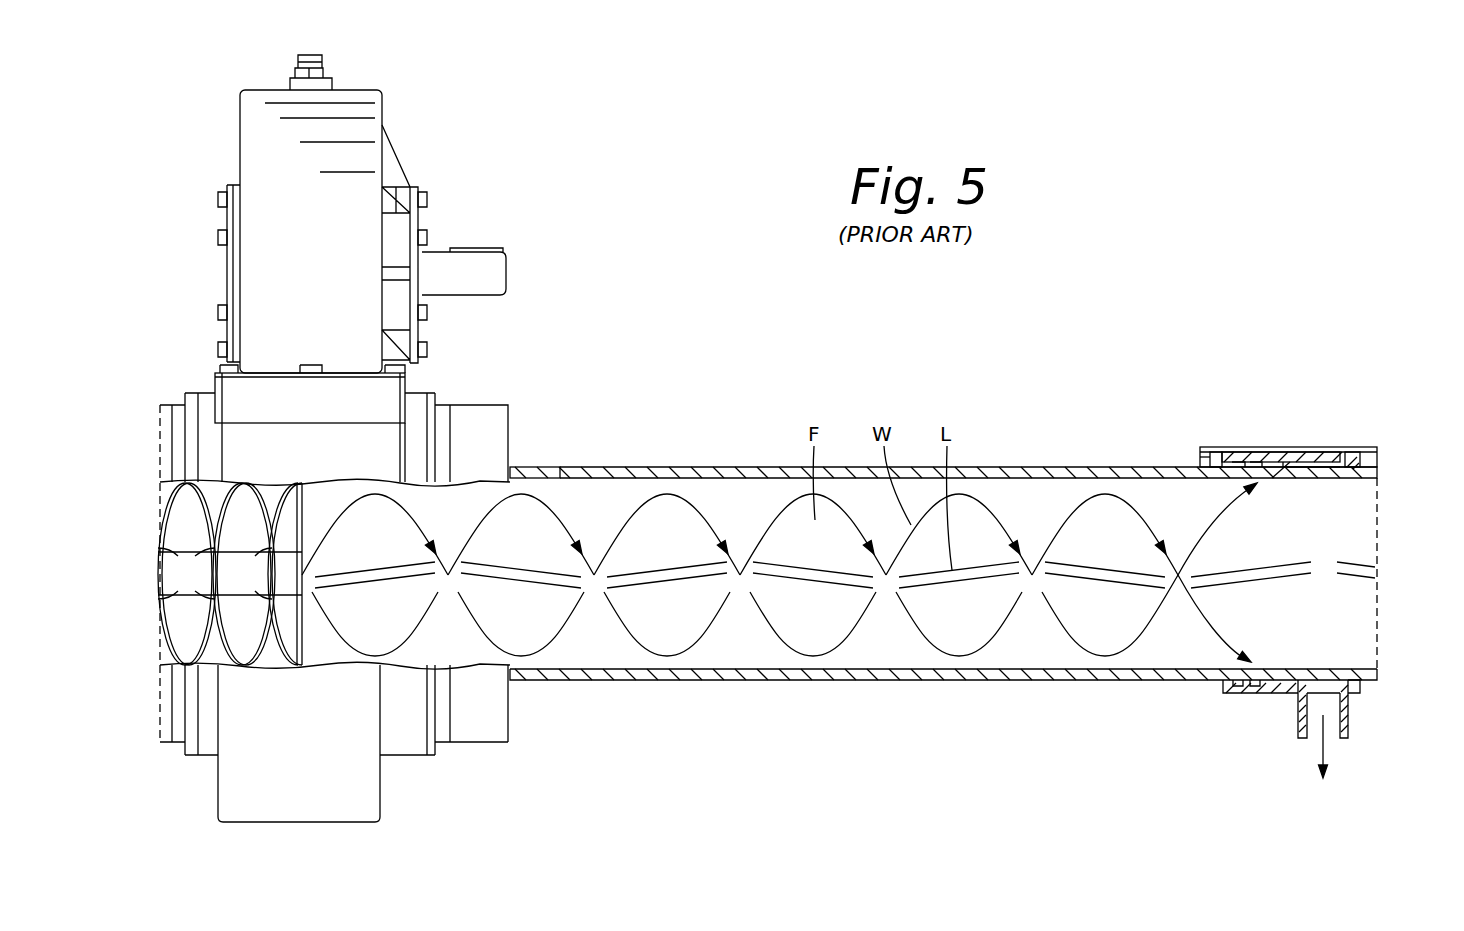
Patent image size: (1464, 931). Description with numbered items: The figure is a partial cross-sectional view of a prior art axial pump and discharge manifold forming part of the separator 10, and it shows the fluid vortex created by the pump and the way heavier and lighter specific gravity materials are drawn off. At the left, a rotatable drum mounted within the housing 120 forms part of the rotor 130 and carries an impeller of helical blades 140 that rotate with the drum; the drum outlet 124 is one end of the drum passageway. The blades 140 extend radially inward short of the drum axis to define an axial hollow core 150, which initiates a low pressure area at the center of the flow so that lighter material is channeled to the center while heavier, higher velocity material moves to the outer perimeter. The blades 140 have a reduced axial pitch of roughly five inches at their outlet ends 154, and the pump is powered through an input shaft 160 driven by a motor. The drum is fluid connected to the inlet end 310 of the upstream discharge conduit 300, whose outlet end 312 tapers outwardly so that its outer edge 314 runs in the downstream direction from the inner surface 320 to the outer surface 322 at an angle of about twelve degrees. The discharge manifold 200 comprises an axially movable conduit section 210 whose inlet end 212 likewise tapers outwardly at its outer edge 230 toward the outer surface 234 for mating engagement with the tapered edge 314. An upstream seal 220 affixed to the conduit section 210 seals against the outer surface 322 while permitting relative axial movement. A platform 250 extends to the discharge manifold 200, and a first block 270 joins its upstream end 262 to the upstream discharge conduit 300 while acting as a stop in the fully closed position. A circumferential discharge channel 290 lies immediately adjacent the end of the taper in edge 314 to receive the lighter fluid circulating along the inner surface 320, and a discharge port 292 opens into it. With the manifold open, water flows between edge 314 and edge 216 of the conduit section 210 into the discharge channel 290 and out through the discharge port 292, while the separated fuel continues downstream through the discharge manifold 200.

The separator 10 is at (634, 348).
The housing 120 is at (460, 392).
The drum outlet 124 is at (465, 648).
The rotor 130 is at (155, 513).
The helical blades 140 is at (243, 653).
The axial hollow core 150 is at (262, 590).
The outlet ends of blades 154 is at (305, 502).
The input shaft 160 is at (500, 274).
The discharge manifold 200 is at (1333, 440).
The axially movable conduit section 210 is at (1353, 668).
The inlet end of conduit section 212 is at (1352, 508).
The edge of movable conduit section 216 is at (1282, 478).
The upstream seal 220 is at (1245, 693).
The outer edge of inlet end 230 is at (1277, 680).
The outer surface of conduit section 234 is at (1340, 467).
The platform 250 is at (1250, 455).
The upstream end of platform 262 is at (1212, 455).
The first block 270 is at (1200, 457).
The circumferential discharge channel 290 is at (1330, 698).
The discharge port 292 is at (1345, 727).
The upstream discharge conduit 300 is at (705, 467).
The inlet end of upstream discharge conduit 310 is at (553, 450).
The outlet end of upstream discharge conduit 312 is at (1257, 666).
The outer edge of outlet end 314 is at (1268, 475).
The inner surface of upstream discharge conduit 320 is at (733, 668).
The outer surface of upstream discharge conduit 322 is at (675, 682).